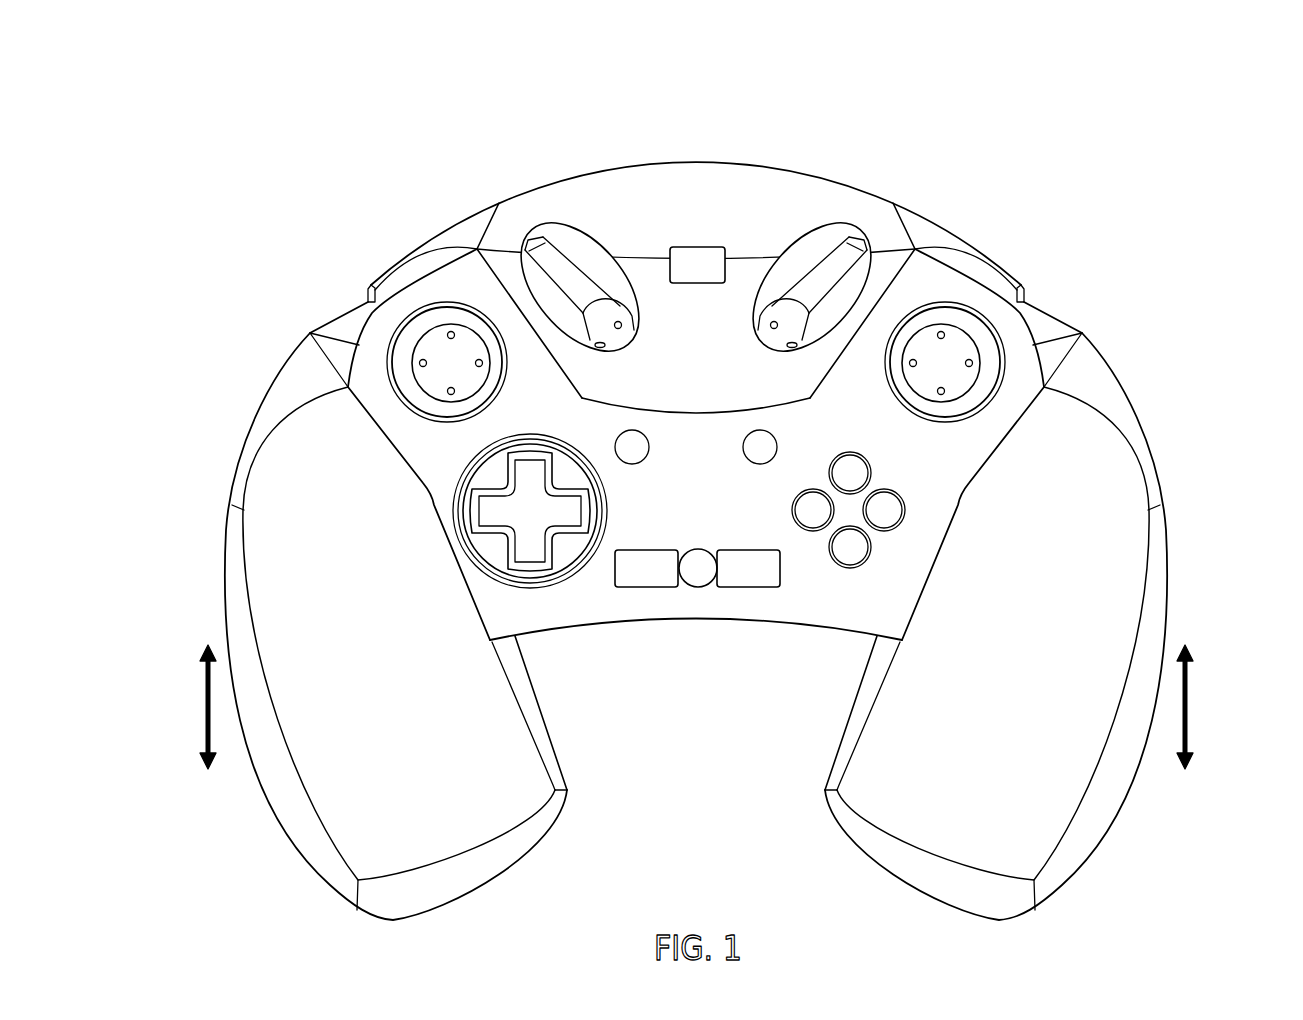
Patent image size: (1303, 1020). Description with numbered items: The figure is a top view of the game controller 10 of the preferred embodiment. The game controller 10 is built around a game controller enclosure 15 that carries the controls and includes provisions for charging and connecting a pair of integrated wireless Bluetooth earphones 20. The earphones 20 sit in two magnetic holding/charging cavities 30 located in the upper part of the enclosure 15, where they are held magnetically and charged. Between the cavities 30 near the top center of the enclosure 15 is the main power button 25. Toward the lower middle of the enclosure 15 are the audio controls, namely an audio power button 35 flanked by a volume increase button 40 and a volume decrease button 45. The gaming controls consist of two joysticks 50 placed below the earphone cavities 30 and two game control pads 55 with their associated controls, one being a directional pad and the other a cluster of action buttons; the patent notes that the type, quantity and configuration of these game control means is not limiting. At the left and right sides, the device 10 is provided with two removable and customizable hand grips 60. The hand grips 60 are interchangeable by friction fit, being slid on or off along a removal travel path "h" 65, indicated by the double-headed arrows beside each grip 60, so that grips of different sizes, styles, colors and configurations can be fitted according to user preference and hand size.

The game controller 10 is at (343, 203).
The game controller enclosure 15 is at (1022, 342).
The integrated wireless Bluetooth earphones 20 is at (583, 310).
The main power button 25 is at (697, 253).
The magnetic holding/charging cavities 30 is at (598, 245).
The audio power button 35 is at (698, 588).
The volume increase button 40 is at (631, 588).
The volume decrease button 45 is at (737, 588).
The joysticks 50 is at (461, 356).
The game control pads 55 is at (523, 510).
The hand grips 60 is at (370, 448).
The removal travel path "h" 65 is at (208, 652).